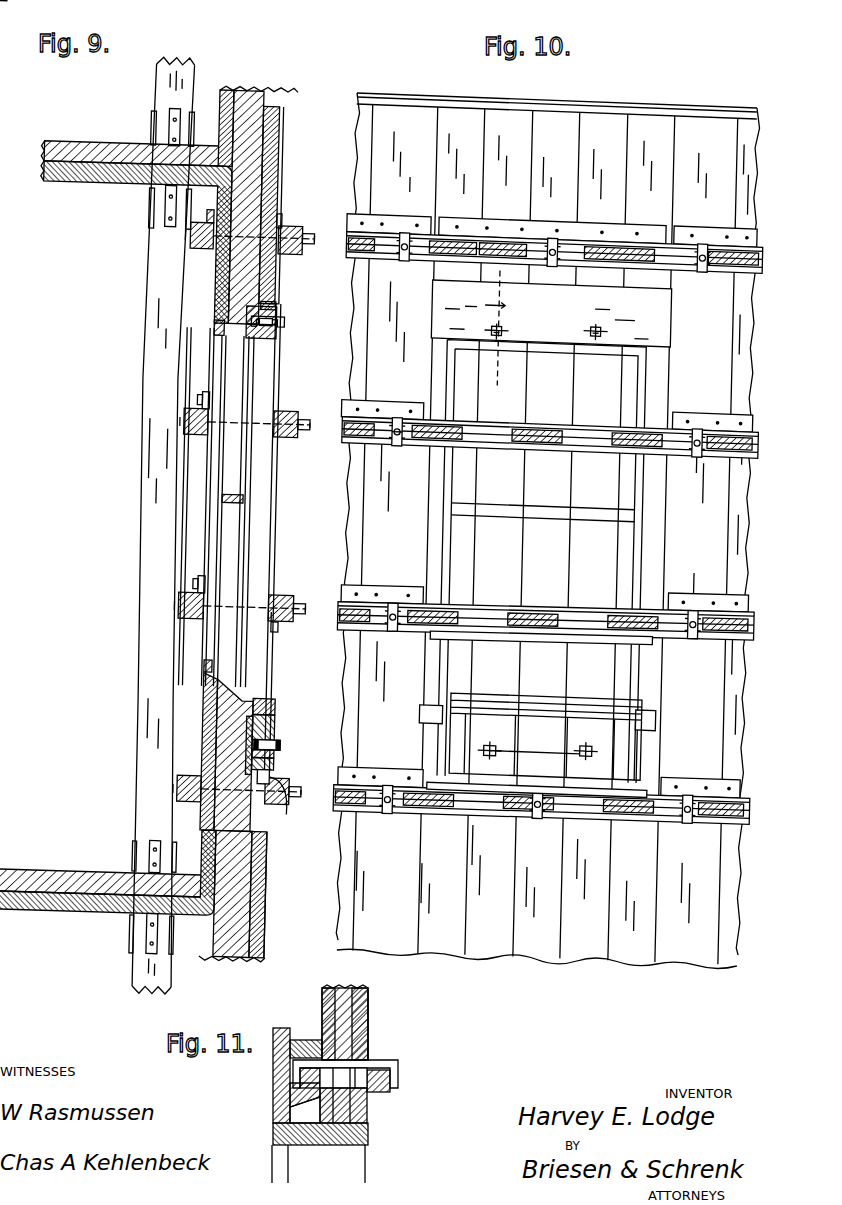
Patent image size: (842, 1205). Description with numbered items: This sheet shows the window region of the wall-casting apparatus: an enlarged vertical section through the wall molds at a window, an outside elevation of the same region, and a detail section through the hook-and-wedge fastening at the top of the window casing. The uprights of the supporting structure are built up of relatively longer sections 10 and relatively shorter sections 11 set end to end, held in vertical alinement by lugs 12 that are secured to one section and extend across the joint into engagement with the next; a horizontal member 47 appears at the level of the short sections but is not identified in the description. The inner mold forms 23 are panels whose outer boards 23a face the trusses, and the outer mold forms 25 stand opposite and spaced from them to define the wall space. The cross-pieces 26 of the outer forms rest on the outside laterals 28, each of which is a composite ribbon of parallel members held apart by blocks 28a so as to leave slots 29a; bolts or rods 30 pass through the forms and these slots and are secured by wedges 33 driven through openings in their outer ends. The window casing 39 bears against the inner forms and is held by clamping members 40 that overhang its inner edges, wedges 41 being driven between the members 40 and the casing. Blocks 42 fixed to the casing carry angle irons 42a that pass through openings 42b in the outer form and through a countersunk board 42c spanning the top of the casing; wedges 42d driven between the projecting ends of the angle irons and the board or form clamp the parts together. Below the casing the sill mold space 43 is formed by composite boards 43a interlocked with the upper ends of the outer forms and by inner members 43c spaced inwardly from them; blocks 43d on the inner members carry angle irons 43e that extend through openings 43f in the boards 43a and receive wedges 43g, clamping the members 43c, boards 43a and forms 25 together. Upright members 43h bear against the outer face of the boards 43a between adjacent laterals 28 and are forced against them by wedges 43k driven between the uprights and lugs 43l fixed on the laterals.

In FIG. 9, the longer upright section 10 is at (162, 84).
In FIG. 9, the shorter upright section 11 is at (158, 129).
In FIG. 10, the shorter upright section 11 is at (518, 281).
In FIG. 9, the lug 12 is at (180, 112).
In FIG. 9, the inner mold form 23 is at (216, 265).
In FIG. 10, the outer board 23a is at (570, 952).
In FIG. 9, the outer mold form 25 is at (283, 163).
In FIG. 11, the outer mold form 25 is at (340, 990).
In FIG. 10, the cross-piece 26 is at (640, 228).
In FIG. 10, the outside lateral 28 is at (462, 240).
In FIG. 10, the spacing block 28a is at (556, 438).
In FIG. 10, the slot 29a is at (492, 620).
In FIG. 10, the bolt 30 is at (560, 242).
In FIG. 10, the wedge 33 is at (405, 444).
In FIG. 9, the window casing 39 is at (217, 378).
In FIG. 11, the window casing 39 is at (321, 1147).
In FIG. 9, the clamping member 40 is at (218, 339).
In FIG. 9, the wedge 41 is at (210, 398).
In FIG. 9, the block 42 is at (272, 297).
In FIG. 11, the block 42 is at (303, 1040).
In FIG. 9, the angle iron 42a is at (288, 318).
In FIG. 10, the angle iron 42a is at (596, 321).
In FIG. 11, the angle iron 42a is at (382, 1064).
In FIG. 9, the opening 42b is at (280, 333).
In FIG. 11, the opening 42b is at (357, 1082).
In FIG. 9, the board 42c is at (280, 300).
In FIG. 10, the board 42c is at (551, 313).
In FIG. 11, the board 42c is at (369, 1010).
In FIG. 9, the wedge 42d is at (278, 322).
In FIG. 10, the wedge 42d is at (594, 328).
In FIG. 11, the wedge 42d is at (390, 1090).
In FIG. 9, the sill mold space 43 is at (268, 700).
In FIG. 9, the composite board 43a is at (272, 712).
In FIG. 9, the inner member 43c is at (252, 742).
In FIG. 9, the block 43d is at (272, 727).
In FIG. 9, the angle iron 43e is at (360, 738).
In FIG. 10, the angle iron 43e is at (501, 741).
In FIG. 9, the opening 43f is at (272, 753).
In FIG. 10, the opening 43f is at (594, 741).
In FIG. 10, the wedge 43g is at (340, 740).
In FIG. 9, the upright member 43h is at (281, 658).
In FIG. 10, the upright member 43h is at (452, 659).
In FIG. 9, the wedge 43k is at (283, 628).
In FIG. 10, the wedge 43k is at (430, 708).
In FIG. 9, the lug 43l is at (287, 614).
In FIG. 10, the lug 43l is at (572, 638).
In FIG. 9, the beam 47 is at (78, 184).